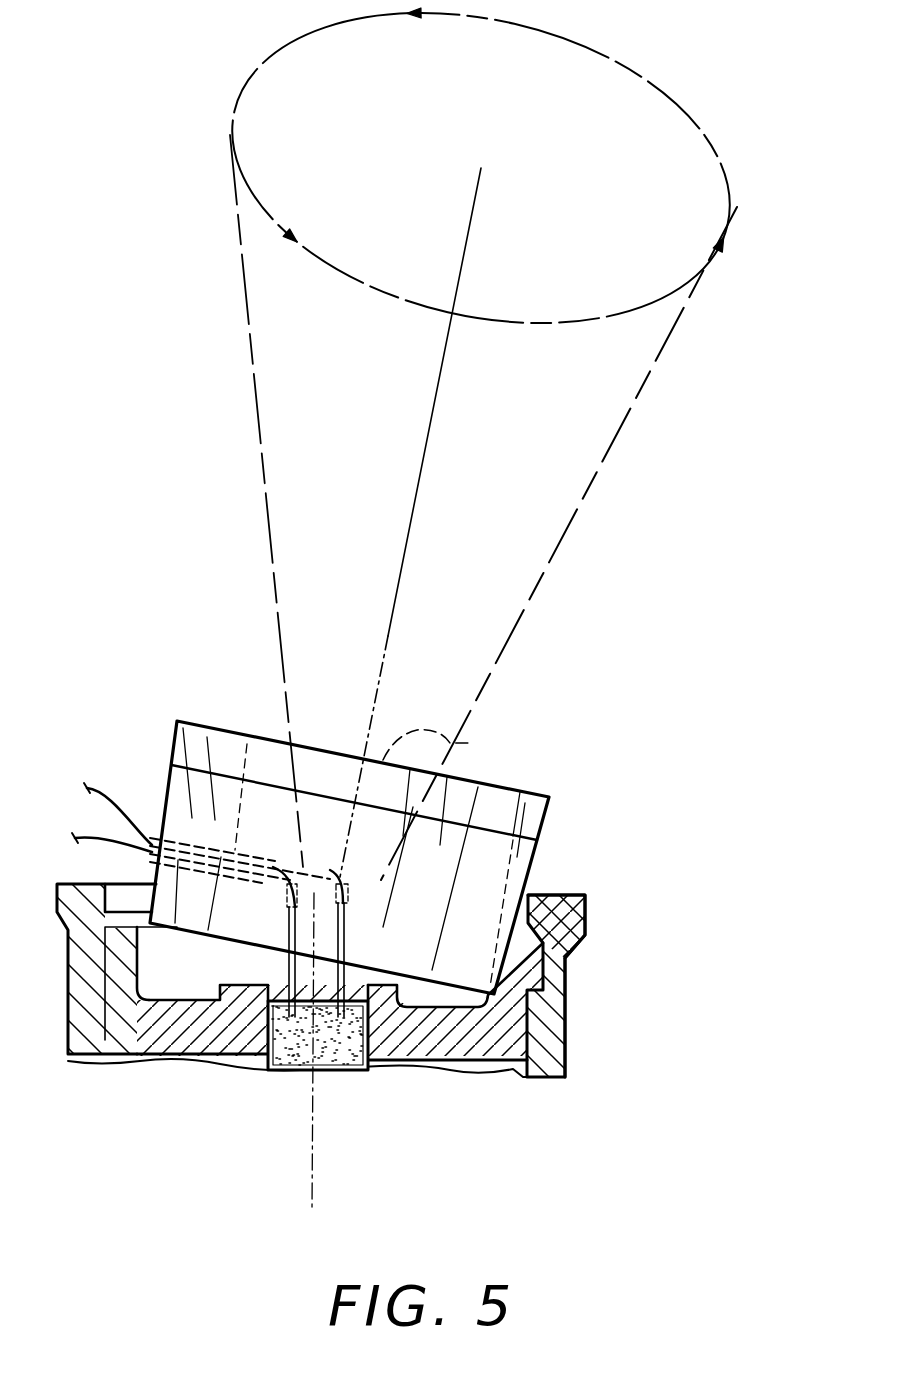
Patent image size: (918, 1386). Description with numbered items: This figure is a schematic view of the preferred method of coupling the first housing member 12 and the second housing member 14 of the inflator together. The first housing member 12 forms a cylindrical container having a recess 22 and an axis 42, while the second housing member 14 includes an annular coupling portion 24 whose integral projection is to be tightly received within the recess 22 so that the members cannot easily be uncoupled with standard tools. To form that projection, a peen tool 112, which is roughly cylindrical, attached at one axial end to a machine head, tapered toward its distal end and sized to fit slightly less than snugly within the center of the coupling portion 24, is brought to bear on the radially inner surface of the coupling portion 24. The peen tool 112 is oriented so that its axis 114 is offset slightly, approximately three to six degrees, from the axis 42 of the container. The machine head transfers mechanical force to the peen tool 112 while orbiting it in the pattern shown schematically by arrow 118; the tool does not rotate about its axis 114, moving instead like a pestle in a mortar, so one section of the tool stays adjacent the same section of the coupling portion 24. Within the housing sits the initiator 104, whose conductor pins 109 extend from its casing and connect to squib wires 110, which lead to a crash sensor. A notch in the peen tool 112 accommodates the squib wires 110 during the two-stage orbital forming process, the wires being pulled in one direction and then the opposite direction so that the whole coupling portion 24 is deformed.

The first housing member 12 is at (578, 1034).
The second housing member 14 is at (465, 1032).
The recess 22 is at (566, 960).
The coupling portion 24 is at (565, 895).
The axis 42 is at (312, 1076).
The initiator 104 is at (338, 1065).
The conductor pins 109 is at (288, 968).
The squib wires 110 is at (93, 837).
The peen tool 112 is at (515, 795).
The axis 114 is at (386, 628).
The arrow 118 is at (679, 106).